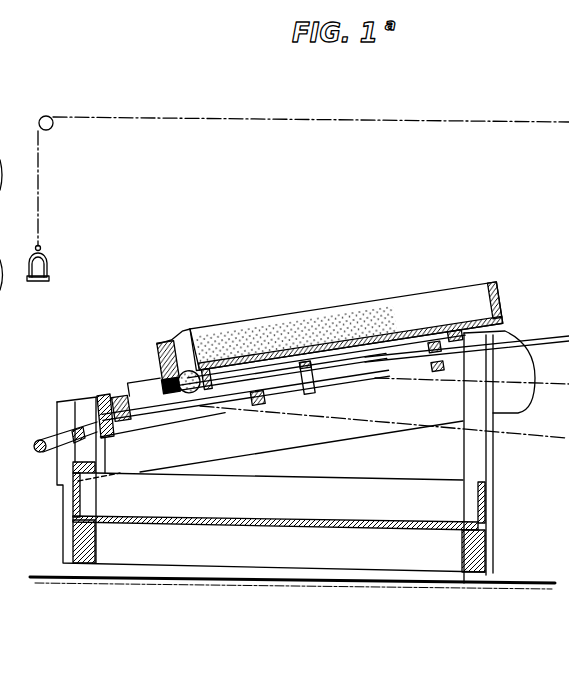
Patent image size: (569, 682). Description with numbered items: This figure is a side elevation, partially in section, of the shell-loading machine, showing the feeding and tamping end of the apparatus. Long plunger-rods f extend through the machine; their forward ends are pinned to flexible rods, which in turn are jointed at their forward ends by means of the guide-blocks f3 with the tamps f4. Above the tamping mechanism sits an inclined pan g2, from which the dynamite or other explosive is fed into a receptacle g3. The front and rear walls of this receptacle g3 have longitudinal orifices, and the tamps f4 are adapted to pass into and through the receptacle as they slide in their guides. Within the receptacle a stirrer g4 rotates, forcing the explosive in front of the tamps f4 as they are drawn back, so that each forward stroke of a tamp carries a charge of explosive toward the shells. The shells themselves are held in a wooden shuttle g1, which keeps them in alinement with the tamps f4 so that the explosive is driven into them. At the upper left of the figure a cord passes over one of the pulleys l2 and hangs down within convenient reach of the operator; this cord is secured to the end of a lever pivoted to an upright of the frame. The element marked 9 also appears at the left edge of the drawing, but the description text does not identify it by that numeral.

The pulleys l2 is at (52, 117).
The weight cord element 9 is at (0, 229).
The inclined pan g2 is at (347, 331).
The stirrer g4 is at (160, 367).
The receptacle g3 is at (122, 394).
The wooden shuttle g1 is at (140, 416).
The tamps f4 is at (231, 393).
The guide-blocks f3 is at (300, 386).
The plunger-rods f is at (540, 338).